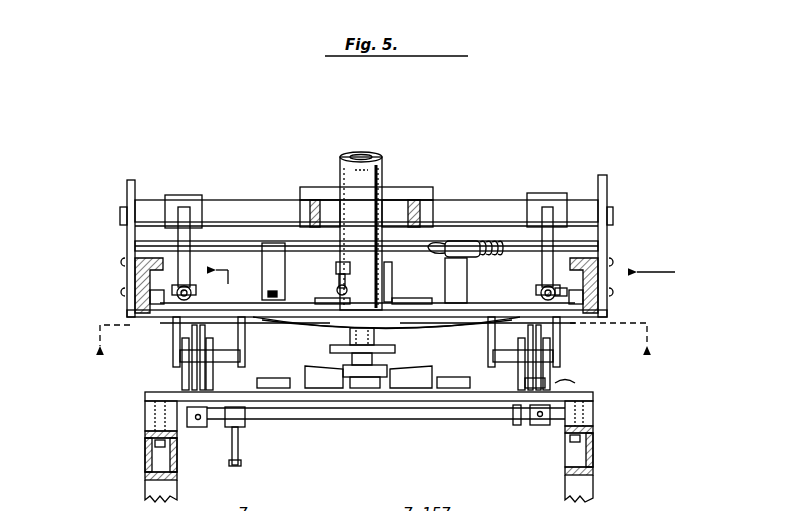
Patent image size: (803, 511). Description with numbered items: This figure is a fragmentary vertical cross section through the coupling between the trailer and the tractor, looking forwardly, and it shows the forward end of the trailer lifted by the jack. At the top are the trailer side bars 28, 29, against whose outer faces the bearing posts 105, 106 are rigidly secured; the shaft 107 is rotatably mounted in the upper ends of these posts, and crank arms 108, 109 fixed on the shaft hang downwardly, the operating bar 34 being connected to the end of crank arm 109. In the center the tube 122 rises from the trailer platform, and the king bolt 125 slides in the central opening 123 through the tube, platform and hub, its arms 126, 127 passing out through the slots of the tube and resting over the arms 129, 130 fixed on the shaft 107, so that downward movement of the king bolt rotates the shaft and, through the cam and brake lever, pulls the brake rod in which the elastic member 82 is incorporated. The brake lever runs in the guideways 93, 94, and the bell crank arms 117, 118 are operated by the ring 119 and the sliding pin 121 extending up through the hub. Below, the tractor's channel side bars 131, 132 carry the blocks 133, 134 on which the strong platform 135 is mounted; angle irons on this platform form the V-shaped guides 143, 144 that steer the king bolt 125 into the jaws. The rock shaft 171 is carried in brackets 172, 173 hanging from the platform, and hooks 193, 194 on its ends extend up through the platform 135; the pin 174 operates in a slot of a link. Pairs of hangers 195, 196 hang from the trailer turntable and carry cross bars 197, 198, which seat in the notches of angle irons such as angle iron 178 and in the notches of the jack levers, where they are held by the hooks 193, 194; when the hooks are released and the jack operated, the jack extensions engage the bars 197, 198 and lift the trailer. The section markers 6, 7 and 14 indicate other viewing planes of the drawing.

The bearing post 105 is at (130, 235).
The bearing post 106 is at (607, 228).
The shaft 107 is at (470, 200).
The crank arm 108 is at (180, 207).
The crank arm 109 is at (548, 207).
The arm 117 is at (378, 282).
The arm 118 is at (340, 274).
The ring 119 is at (395, 349).
The sliding pin 121 is at (355, 330).
The tube 122 is at (382, 170).
The central opening 123 is at (365, 157).
The king bolt 125 is at (365, 388).
The arm 126 is at (305, 200).
The arm 127 is at (415, 187).
The arm 129 is at (312, 213).
The arm 130 is at (412, 210).
The side bar 131 is at (148, 452).
The side bar 132 is at (595, 450).
The block 133 is at (145, 408).
The block 134 is at (593, 413).
The platform 135 is at (593, 396).
The guide 143 is at (320, 388).
The guide 144 is at (422, 388).
The rock shaft 171 is at (290, 419).
The bracket 172 is at (235, 427).
The bracket 173 is at (517, 425).
The pin 174 is at (241, 463).
The angle iron 178 is at (567, 386).
The hook 193 is at (198, 427).
The hook 194 is at (540, 425).
The pair of hangers 195 is at (182, 345).
The pair of hangers 196 is at (560, 345).
The cross bar 197 is at (225, 362).
The cross bar 198 is at (515, 362).
The side bar 28 is at (135, 285).
The side bar 29 is at (590, 283).
The operating bar 34 is at (548, 297).
The elastic member 82 is at (470, 255).
The guideway 93 is at (265, 270).
The guideway 94 is at (445, 275).
The section line 6 is at (372, 325).
The section line 7 is at (228, 270).
The section line 14 is at (669, 265).